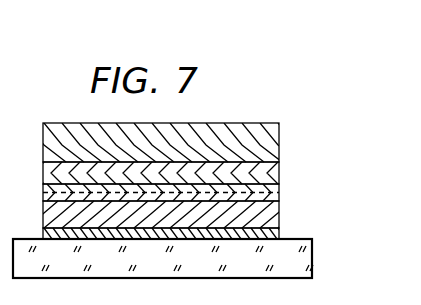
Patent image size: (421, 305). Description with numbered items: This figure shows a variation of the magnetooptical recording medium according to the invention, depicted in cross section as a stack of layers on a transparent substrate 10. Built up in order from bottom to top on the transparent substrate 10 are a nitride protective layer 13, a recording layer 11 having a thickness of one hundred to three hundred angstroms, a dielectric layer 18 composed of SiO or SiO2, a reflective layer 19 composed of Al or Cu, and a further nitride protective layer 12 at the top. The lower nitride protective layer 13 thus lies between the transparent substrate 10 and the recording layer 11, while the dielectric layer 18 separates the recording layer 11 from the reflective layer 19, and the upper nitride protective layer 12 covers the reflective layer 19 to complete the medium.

The transparent substrate 10 is at (298, 260).
The nitride protective layer 13 is at (272, 232).
The recording layer 11 is at (267, 215).
The dielectric layer 18 is at (263, 192).
The reflective layer 19 is at (267, 175).
The nitride protective layer 12 is at (273, 141).